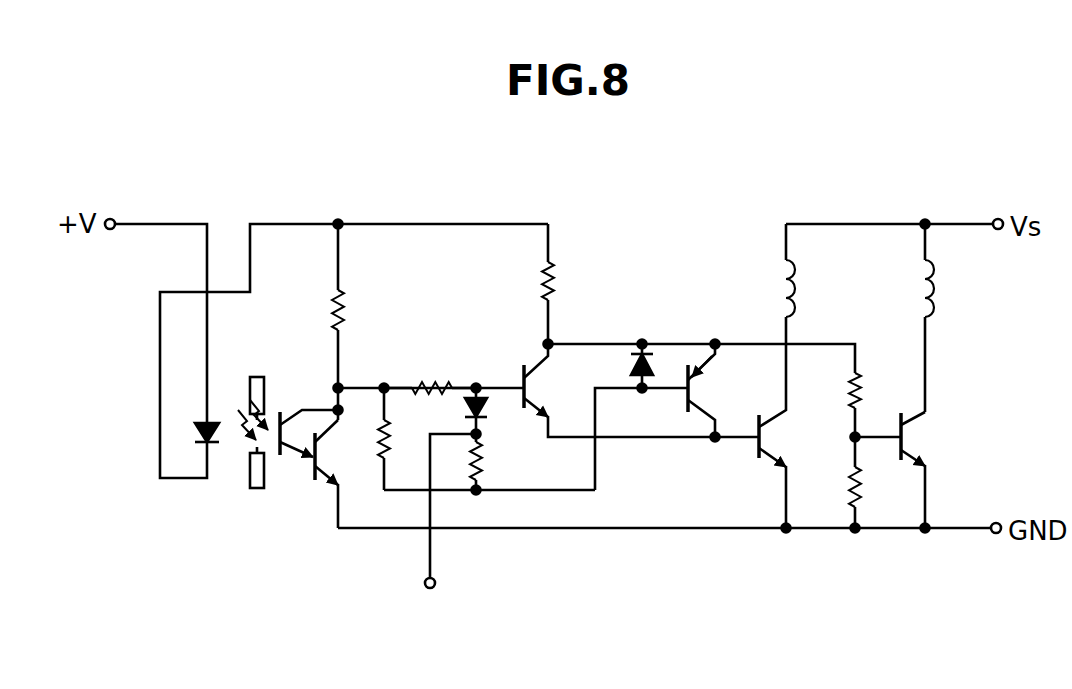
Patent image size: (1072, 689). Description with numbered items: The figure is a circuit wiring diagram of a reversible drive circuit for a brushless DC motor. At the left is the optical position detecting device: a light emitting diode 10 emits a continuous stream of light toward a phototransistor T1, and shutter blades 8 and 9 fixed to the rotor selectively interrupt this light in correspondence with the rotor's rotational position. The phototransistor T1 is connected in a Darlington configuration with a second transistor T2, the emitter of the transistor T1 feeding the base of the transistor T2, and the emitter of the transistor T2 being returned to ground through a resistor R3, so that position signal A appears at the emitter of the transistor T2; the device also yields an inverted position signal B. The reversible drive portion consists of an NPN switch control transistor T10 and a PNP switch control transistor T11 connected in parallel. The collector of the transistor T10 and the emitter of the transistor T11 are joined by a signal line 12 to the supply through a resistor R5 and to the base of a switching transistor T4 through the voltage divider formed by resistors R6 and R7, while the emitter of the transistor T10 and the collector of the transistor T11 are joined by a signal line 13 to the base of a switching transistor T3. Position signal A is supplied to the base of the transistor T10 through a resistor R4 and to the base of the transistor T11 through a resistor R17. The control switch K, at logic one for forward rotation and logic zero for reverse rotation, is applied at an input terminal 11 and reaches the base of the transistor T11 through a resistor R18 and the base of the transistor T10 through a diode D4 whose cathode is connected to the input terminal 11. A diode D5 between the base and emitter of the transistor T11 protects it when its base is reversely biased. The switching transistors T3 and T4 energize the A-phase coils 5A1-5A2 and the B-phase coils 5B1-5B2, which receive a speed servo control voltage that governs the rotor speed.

The shutter blade 8 is at (255, 377).
The shutter blade 9 is at (257, 488).
The light emitting diode 10 is at (190, 436).
The input terminal 11 is at (429, 589).
The signal line 12 is at (590, 343).
The signal line 13 is at (640, 438).
The control switch K is at (432, 553).
The position signal A is at (361, 388).
The inverted position signal B is at (542, 358).
The resistor R3 is at (333, 311).
The resistor R4 is at (432, 380).
The resistor R5 is at (544, 291).
The resistor R6 is at (861, 385).
The resistor R7 is at (862, 487).
The resistor R17 is at (389, 434).
The resistor R18 is at (486, 462).
The diode D4 is at (486, 411).
The diode D5 is at (651, 352).
The phototransistor T1 is at (283, 421).
The transistor T2 is at (328, 466).
The switching transistor T3 is at (773, 437).
The switching transistor T4 is at (908, 437).
The switch control transistor T10 is at (533, 391).
The switch control transistor T11 is at (699, 387).
The A-phase coils 5A1-5A2 is at (795, 297).
The B-phase coils 5B1-5B2 is at (934, 297).